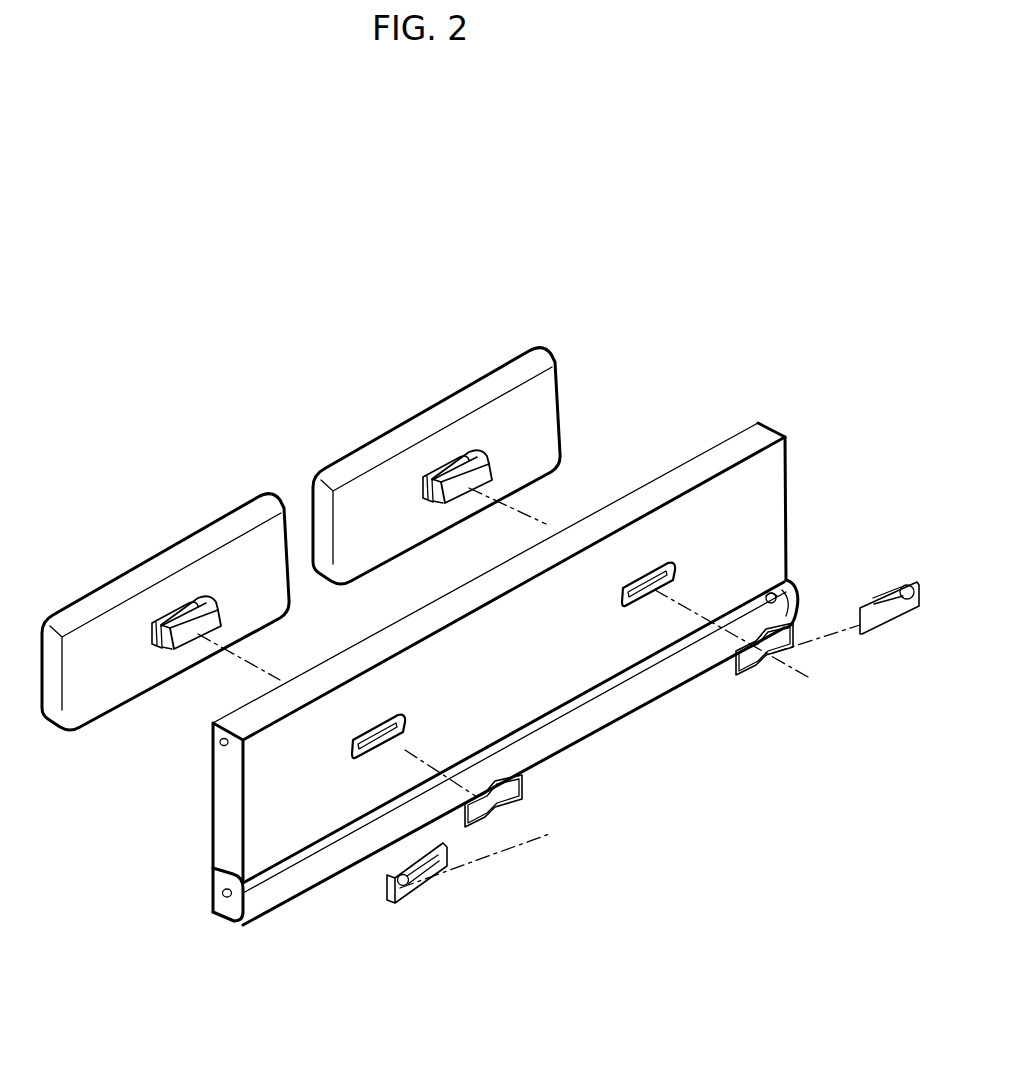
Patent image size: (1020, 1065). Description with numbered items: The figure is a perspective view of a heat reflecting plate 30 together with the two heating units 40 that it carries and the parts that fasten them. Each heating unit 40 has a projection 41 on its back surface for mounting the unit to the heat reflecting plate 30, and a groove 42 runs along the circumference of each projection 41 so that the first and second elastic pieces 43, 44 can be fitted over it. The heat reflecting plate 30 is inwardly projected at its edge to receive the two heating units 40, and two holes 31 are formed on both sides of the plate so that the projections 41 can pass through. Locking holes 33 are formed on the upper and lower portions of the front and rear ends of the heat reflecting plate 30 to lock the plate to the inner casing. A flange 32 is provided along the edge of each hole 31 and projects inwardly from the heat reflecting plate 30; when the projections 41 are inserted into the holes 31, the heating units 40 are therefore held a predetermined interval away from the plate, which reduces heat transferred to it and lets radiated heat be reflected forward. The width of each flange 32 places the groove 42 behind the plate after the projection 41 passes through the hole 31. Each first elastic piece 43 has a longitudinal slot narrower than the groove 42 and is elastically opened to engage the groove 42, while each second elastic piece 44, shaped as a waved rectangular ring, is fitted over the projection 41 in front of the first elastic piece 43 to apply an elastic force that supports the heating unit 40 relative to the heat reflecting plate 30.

The heat reflecting plate 30 is at (226, 811).
The hole 31 is at (362, 744).
The flange 32 is at (405, 721).
The locking hole 33 is at (215, 749).
The heating unit 40 is at (172, 553).
The projection 41 is at (196, 636).
The groove 42 is at (152, 641).
The first elastic piece 43 is at (423, 883).
The second elastic piece 44 is at (522, 786).